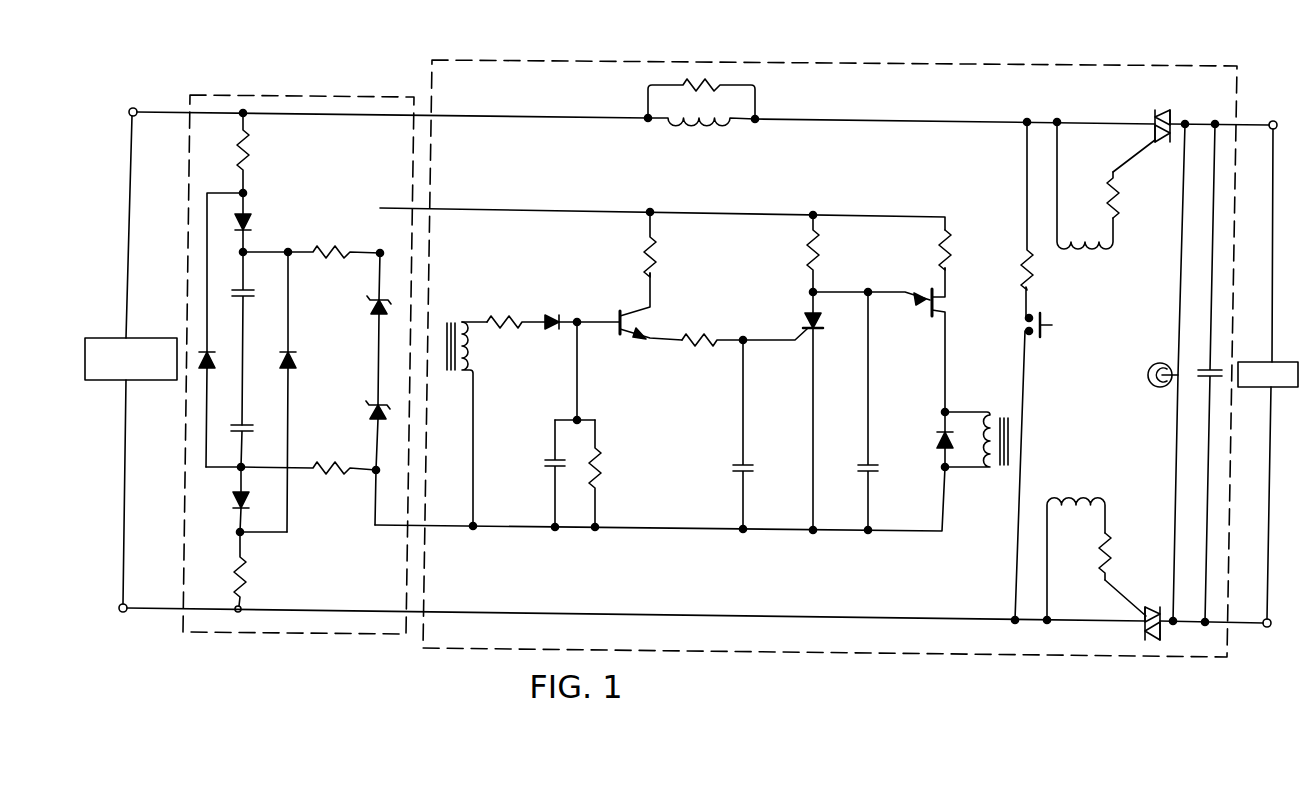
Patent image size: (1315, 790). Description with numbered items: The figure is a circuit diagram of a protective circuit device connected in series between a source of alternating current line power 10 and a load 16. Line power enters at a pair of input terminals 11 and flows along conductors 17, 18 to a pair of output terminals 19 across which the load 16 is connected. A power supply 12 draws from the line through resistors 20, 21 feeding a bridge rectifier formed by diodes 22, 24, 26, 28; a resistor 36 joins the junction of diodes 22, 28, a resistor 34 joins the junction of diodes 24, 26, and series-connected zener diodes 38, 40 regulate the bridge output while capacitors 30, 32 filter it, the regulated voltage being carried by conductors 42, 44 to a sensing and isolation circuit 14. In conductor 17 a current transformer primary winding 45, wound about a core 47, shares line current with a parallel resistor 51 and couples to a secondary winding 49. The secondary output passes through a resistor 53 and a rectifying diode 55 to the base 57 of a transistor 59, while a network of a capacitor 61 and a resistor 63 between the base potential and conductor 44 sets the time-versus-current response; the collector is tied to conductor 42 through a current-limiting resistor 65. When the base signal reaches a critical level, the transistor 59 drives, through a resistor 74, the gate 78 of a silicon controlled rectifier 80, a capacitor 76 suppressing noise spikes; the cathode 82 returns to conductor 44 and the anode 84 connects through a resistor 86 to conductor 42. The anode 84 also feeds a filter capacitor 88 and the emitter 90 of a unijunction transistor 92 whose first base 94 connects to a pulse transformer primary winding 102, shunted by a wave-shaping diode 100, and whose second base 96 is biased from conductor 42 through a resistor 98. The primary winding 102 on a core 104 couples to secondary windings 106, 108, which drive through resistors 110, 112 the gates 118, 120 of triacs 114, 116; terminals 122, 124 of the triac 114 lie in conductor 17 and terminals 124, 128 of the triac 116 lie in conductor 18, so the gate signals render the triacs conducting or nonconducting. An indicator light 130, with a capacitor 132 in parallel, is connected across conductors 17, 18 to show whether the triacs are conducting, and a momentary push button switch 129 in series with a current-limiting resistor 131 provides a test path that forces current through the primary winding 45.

The source of alternating current line power 10 is at (98, 338).
The input terminals 11 is at (137, 109).
The protective circuit power supply 12 is at (303, 92).
The sensing and isolation circuit 14 is at (795, 652).
The load 16 is at (1292, 362).
The line conductor 17 is at (495, 115).
The line conductor 18 is at (470, 616).
The output terminals 19 is at (1273, 120).
The resistor 20 is at (252, 153).
The resistor 21 is at (250, 576).
The diode 22 is at (211, 358).
The diode 24 is at (252, 222).
The diode 26 is at (298, 361).
The diode 28 is at (249, 505).
The capacitor 30 is at (249, 430).
The capacitor 32 is at (250, 293).
The resistor 34 is at (336, 251).
The resistor 36 is at (331, 481).
The zener diode 38 is at (368, 312).
The zener diode 40 is at (367, 416).
The conductor 42 is at (505, 210).
The conductor 44 is at (497, 530).
The current transformer primary winding 45 is at (690, 139).
The core 47 is at (456, 318).
The current transformer secondary winding 49 is at (472, 353).
The resistor 51 is at (720, 86).
The resistor 53 is at (506, 314).
The diode 55 is at (549, 331).
The base 57 is at (619, 311).
The transistor 59 is at (617, 338).
The capacitor 61 is at (541, 467).
The resistor 63 is at (605, 465).
The resistor 65 is at (658, 251).
The resistor 74 is at (705, 332).
The capacitor 76 is at (752, 466).
The gate 78 is at (801, 347).
The silicon controlled rectifier 80 is at (822, 321).
The cathode 82 is at (822, 332).
The anode 84 is at (811, 312).
The resistor 86 is at (822, 251).
The filter capacitor 88 is at (876, 464).
The emitter 90 is at (922, 306).
The unijunction transistor 92 is at (923, 314).
The first base 94 is at (938, 320).
The second base 96 is at (937, 286).
The resistor 98 is at (955, 245).
The diode 100 is at (934, 449).
The pulse transformer primary winding 102 is at (991, 409).
The core 104 is at (1002, 478).
The secondary winding 106 is at (1085, 254).
The secondary winding 108 is at (1080, 497).
The resistor 110 is at (1122, 192).
The resistor 112 is at (1118, 545).
The triac 114 is at (1164, 143).
The triac 116 is at (1153, 606).
The gate 118 is at (1147, 137).
The gate 120 is at (1135, 607).
The terminal 122 is at (1152, 118).
The terminal 124 is at (1180, 118).
The terminal 128 is at (1165, 629).
The momentary push button switch 129 is at (1045, 338).
The indicator light 130 is at (1150, 386).
The resistor 131 is at (1035, 280).
The capacitor 132 is at (1218, 366).